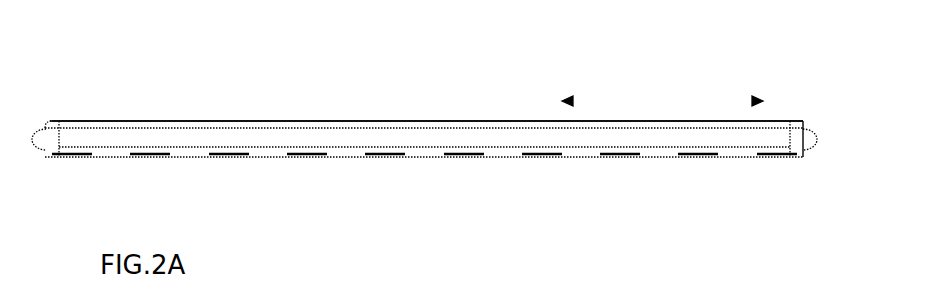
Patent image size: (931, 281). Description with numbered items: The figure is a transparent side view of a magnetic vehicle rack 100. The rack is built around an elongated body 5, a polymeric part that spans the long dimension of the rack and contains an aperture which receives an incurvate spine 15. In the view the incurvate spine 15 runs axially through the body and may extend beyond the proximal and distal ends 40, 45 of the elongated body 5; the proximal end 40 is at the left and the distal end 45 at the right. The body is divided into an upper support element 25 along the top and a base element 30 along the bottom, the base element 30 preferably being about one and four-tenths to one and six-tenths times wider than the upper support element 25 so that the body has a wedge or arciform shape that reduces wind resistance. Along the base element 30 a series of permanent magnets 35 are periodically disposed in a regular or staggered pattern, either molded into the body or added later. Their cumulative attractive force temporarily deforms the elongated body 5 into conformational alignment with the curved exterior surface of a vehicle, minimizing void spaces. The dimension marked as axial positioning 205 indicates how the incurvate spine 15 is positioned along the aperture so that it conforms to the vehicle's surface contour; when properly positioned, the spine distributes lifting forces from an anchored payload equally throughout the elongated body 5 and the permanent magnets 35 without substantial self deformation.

The magnetic vehicle rack 100 is at (73, 87).
The elongated body 5 is at (96, 142).
The incurvate spine 15 is at (425, 141).
The upper support element 25 is at (260, 120).
The base element 30 is at (265, 159).
The permanent magnets 35 is at (56, 158).
The proximal end 40 is at (45, 157).
The distal end 45 is at (799, 121).
The axial positioning 205 is at (752, 101).